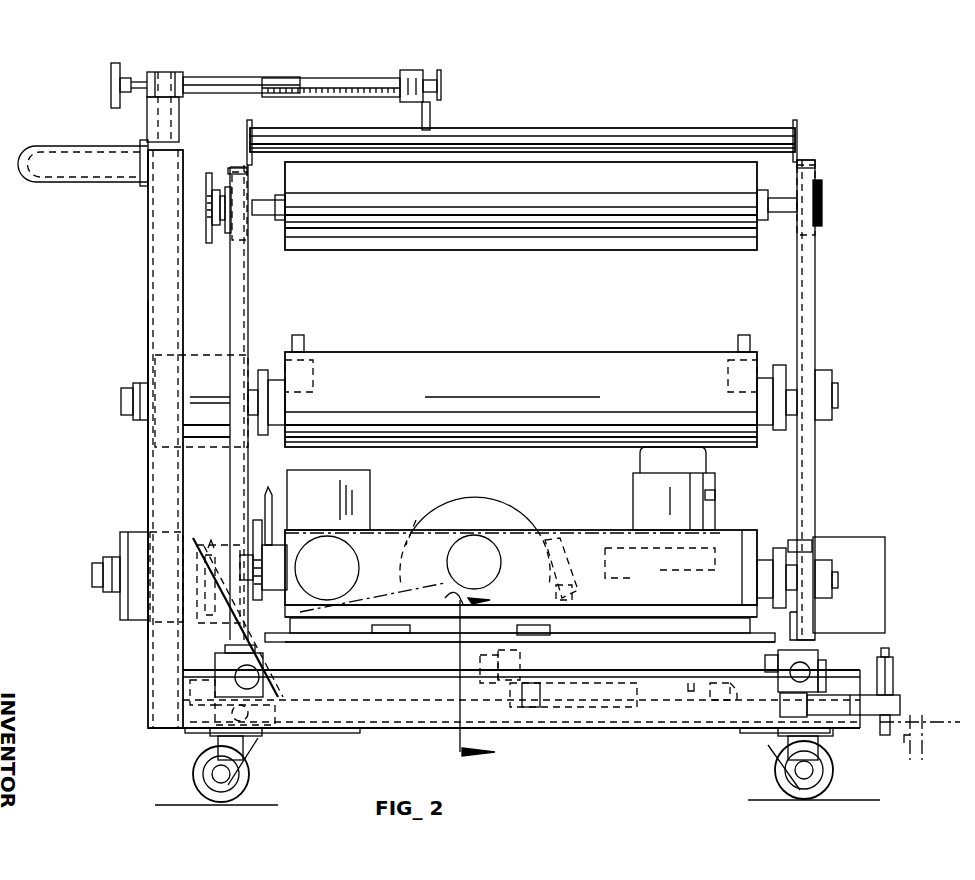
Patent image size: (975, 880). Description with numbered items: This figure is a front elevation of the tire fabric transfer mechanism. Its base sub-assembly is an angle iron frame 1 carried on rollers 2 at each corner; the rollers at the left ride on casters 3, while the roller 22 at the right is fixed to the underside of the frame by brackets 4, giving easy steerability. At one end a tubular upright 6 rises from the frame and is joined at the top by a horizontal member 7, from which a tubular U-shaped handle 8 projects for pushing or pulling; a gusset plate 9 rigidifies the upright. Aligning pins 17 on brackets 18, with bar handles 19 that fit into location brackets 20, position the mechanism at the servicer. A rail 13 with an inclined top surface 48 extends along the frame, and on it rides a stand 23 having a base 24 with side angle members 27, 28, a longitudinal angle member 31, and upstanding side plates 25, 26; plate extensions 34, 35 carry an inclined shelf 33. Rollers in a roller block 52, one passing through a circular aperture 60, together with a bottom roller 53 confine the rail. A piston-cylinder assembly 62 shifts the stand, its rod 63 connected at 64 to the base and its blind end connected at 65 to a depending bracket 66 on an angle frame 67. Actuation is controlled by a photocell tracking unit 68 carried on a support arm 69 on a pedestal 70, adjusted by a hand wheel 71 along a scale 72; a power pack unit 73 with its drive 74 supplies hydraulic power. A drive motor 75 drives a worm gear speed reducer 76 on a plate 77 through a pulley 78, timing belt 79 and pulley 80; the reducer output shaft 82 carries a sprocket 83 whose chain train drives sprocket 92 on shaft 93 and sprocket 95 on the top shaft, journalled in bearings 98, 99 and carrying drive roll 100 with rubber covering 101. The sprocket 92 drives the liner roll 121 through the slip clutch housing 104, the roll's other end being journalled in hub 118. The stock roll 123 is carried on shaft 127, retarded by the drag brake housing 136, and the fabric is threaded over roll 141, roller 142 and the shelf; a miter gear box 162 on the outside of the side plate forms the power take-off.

The angle iron frame 1 is at (552, 718).
The rollers 2 is at (238, 786).
The casters 3 is at (210, 742).
The brackets 4 is at (820, 740).
The tubular upright 6 is at (150, 310).
The horizontal member 7 is at (180, 151).
The tubular U-shaped handle 8 is at (64, 184).
The gusset plate 9 is at (178, 654).
The rail 13 is at (384, 711).
The aligning pins 17 is at (892, 686).
The brackets 18 is at (908, 698).
The horizontal bar handles 19 is at (886, 654).
The location brackets 20 is at (920, 708).
The caster wheel 22 is at (832, 772).
The stand 23 is at (832, 344).
The base or platform 24 is at (655, 665).
The side plate 25 is at (259, 402).
The side plate 26 is at (810, 308).
The side angle member 27 is at (240, 642).
The side angle member 28 is at (800, 642).
The longitudinally extending angle member 31 is at (638, 640).
The inclined shelf 33 is at (712, 126).
The plate extension 34 is at (248, 140).
The plate extension 35 is at (798, 128).
The inclined top lateral surface 48 is at (400, 700).
The roller block 52 is at (776, 664).
The bottom roller 53 is at (250, 734).
The circular aperture 60 is at (822, 672).
The piston-cylinder assembly 62 is at (598, 715).
The rod 63 is at (690, 682).
The rod connection 64 is at (720, 702).
The blind end connection 65 is at (534, 716).
The depending bracket 66 is at (506, 666).
The angle frame 67 is at (498, 668).
The photocell tracking unit 68 is at (444, 104).
The support arm 69 is at (220, 92).
The pedestal 70 is at (147, 107).
The hand wheel 71 is at (110, 78).
The scale 72 is at (336, 94).
The power pack unit 73 is at (640, 564).
The drive 74 is at (708, 510).
The drive motor 75 is at (504, 522).
The worm gear speed reducer 76 is at (366, 512).
The plate 77 is at (402, 640).
The pulley 78 is at (511, 571).
The timing belt 79 is at (420, 520).
The pulley 80 is at (362, 562).
The output shaft 82 is at (240, 546).
The sprocket 83 is at (274, 499).
The sprocket 92 is at (206, 554).
The shaft 93 is at (102, 584).
The sprocket 95 is at (212, 246).
The bearing 98 is at (248, 236).
The bearing 99 is at (818, 190).
The roll 100 is at (766, 244).
The rubber covering 101 is at (510, 250).
The cylindrical housing 104 is at (140, 626).
The hub 118 is at (812, 548).
The liner roll 121 is at (576, 536).
The stock roll 123 is at (462, 360).
The shaft 127 is at (128, 410).
The cylindrical housing 136 is at (209, 360).
The roll 141 is at (490, 196).
The roller 142 is at (586, 134).
The miter gear box 162 is at (880, 582).